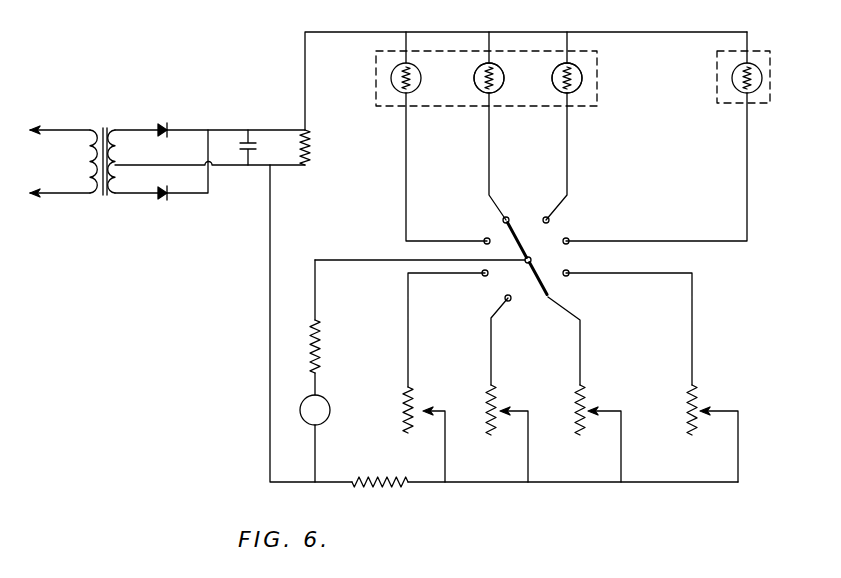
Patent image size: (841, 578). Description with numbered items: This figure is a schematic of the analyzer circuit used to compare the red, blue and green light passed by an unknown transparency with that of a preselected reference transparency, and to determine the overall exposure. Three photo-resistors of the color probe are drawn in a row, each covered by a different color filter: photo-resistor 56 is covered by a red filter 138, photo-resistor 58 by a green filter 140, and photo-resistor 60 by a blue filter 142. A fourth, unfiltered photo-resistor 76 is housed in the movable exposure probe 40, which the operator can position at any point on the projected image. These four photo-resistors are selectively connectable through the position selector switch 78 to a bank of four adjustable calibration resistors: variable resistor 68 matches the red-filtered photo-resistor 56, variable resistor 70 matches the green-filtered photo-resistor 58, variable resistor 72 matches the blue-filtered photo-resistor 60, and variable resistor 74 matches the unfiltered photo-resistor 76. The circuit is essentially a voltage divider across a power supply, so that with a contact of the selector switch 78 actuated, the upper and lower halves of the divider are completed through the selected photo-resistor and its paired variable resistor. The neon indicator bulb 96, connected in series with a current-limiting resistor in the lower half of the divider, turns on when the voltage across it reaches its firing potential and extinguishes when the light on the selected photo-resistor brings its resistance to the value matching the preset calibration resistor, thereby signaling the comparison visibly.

The photo-resistor 56 is at (396, 88).
The red filter 138 is at (428, 88).
The green filter 140 is at (474, 80).
The photo-resistor 58 is at (500, 90).
The photo-resistor 60 is at (580, 72).
The blue filter 142 is at (577, 90).
The unfiltered photo-resistor 76 is at (738, 88).
The exposure probe 40 is at (758, 103).
The position selector switch 78 is at (557, 224).
The neon indicator bulb 96 is at (330, 407).
The variable resistor 74 is at (420, 413).
The variable resistor 72 is at (487, 412).
The variable resistor 70 is at (578, 412).
The variable resistor 68 is at (690, 408).